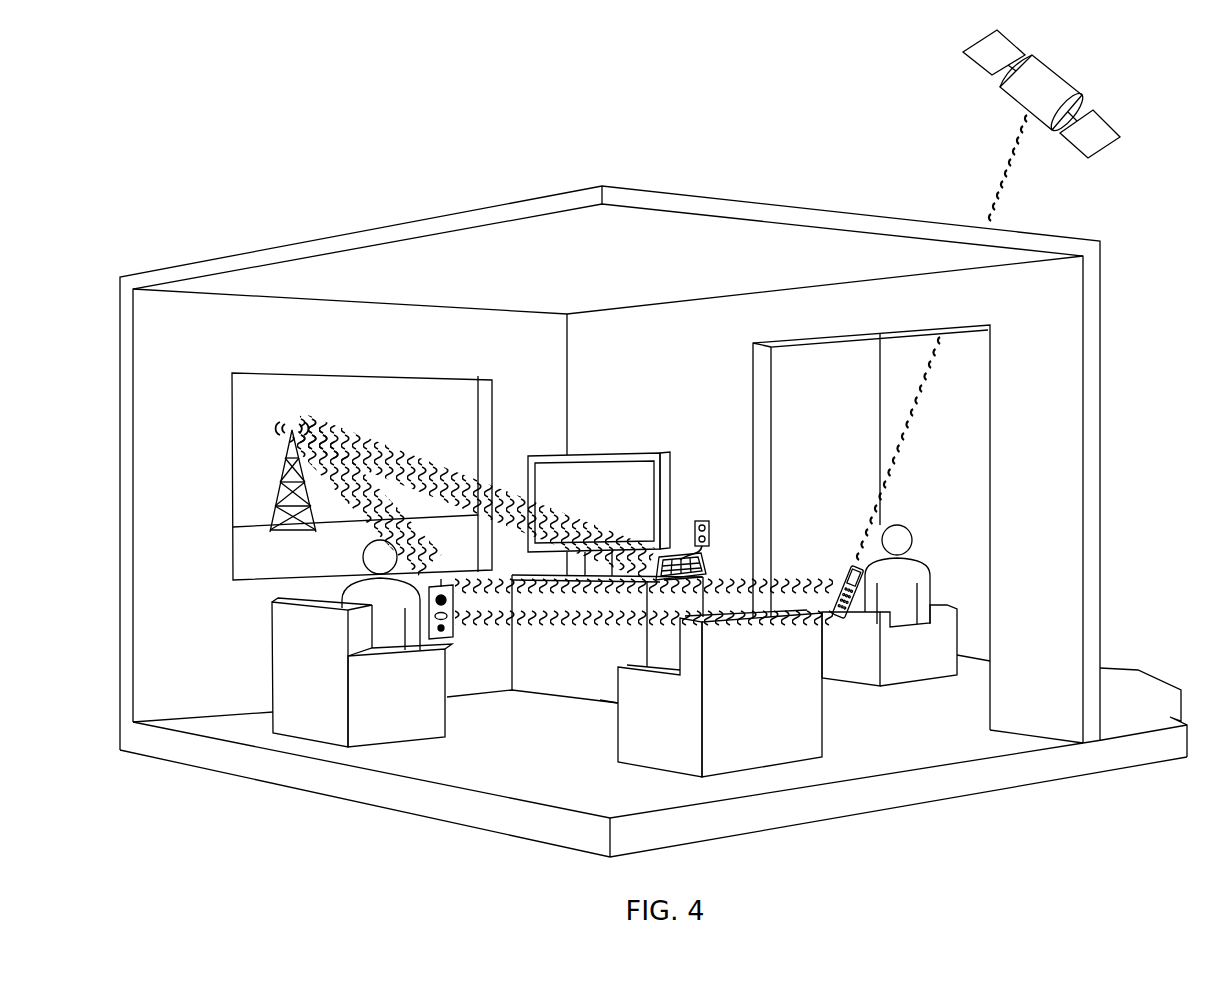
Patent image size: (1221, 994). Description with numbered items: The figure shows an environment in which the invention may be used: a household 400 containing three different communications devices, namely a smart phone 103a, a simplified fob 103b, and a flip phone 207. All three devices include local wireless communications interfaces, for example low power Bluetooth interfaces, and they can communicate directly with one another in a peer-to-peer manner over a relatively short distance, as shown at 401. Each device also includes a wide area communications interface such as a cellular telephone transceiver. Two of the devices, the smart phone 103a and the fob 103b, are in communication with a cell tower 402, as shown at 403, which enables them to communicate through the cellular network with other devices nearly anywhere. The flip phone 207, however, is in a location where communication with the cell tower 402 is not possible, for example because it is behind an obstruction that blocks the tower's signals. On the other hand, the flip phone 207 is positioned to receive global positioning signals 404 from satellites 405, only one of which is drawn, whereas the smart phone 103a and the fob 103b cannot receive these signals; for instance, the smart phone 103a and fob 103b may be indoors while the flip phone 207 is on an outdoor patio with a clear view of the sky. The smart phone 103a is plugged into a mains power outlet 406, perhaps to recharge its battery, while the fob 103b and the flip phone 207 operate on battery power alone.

The household 400 is at (322, 212).
The direct communication between devices 401 is at (525, 632).
The cell tower 402 is at (286, 470).
The communication with cell tower 403 is at (352, 480).
The global positioning signals 404 is at (893, 482).
The satellites 405 is at (1008, 96).
The mains power outlet 406 is at (708, 524).
The smart phone 103a is at (684, 552).
The simplified fob 103b is at (457, 633).
The flip phone 207 is at (855, 560).